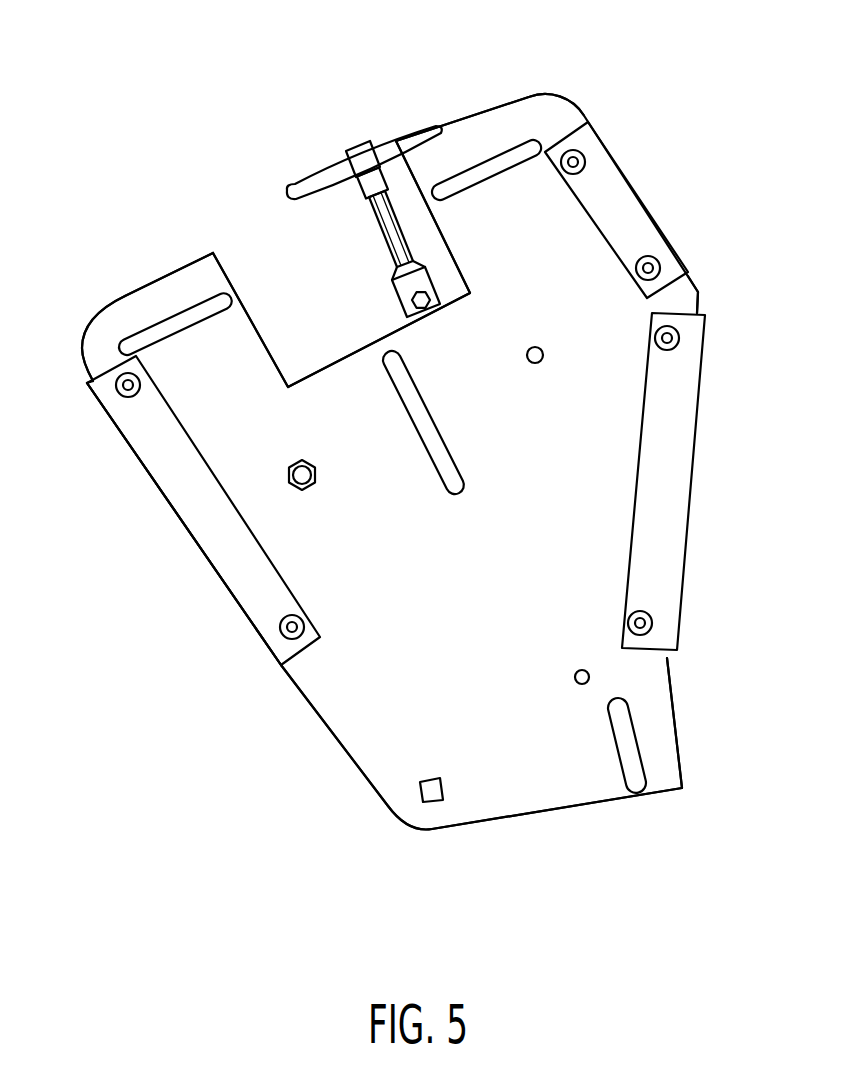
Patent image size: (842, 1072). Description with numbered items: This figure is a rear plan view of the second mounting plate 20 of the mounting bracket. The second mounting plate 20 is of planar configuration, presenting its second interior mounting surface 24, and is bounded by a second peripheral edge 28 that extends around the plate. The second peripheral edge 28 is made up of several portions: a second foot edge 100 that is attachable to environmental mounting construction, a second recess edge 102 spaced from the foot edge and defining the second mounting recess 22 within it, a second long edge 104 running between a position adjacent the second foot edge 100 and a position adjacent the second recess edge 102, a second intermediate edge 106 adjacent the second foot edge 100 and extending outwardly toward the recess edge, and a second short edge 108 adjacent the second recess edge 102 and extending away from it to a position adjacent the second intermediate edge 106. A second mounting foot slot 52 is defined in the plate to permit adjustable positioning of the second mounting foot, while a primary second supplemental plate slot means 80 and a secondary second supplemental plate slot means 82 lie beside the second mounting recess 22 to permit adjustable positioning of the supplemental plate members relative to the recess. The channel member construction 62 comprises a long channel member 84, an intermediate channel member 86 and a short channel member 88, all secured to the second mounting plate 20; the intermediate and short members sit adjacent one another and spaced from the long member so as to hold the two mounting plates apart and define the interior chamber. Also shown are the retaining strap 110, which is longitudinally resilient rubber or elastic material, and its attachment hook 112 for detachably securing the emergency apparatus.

The second mounting plate 20 is at (390, 462).
The second mounting recess 22 is at (341, 264).
The second interior mounting surface 24 is at (373, 660).
The second peripheral edge 28 is at (90, 323).
The second mounting foot slot 52 is at (630, 752).
The channel member construction 62 is at (653, 217).
The primary second supplemental plate slot means 80 is at (507, 160).
The secondary second supplemental plate slot means 82 is at (175, 323).
The long channel member 84 is at (250, 590).
The intermediate channel member 86 is at (663, 495).
The short channel member 88 is at (608, 202).
The second foot edge 100 is at (553, 810).
The second recess edge 102 is at (212, 252).
The second long edge 104 is at (367, 779).
The second intermediate edge 106 is at (667, 660).
The second short edge 108 is at (693, 284).
The retaining strap 110 is at (400, 306).
The attachment hook 112 is at (357, 143).